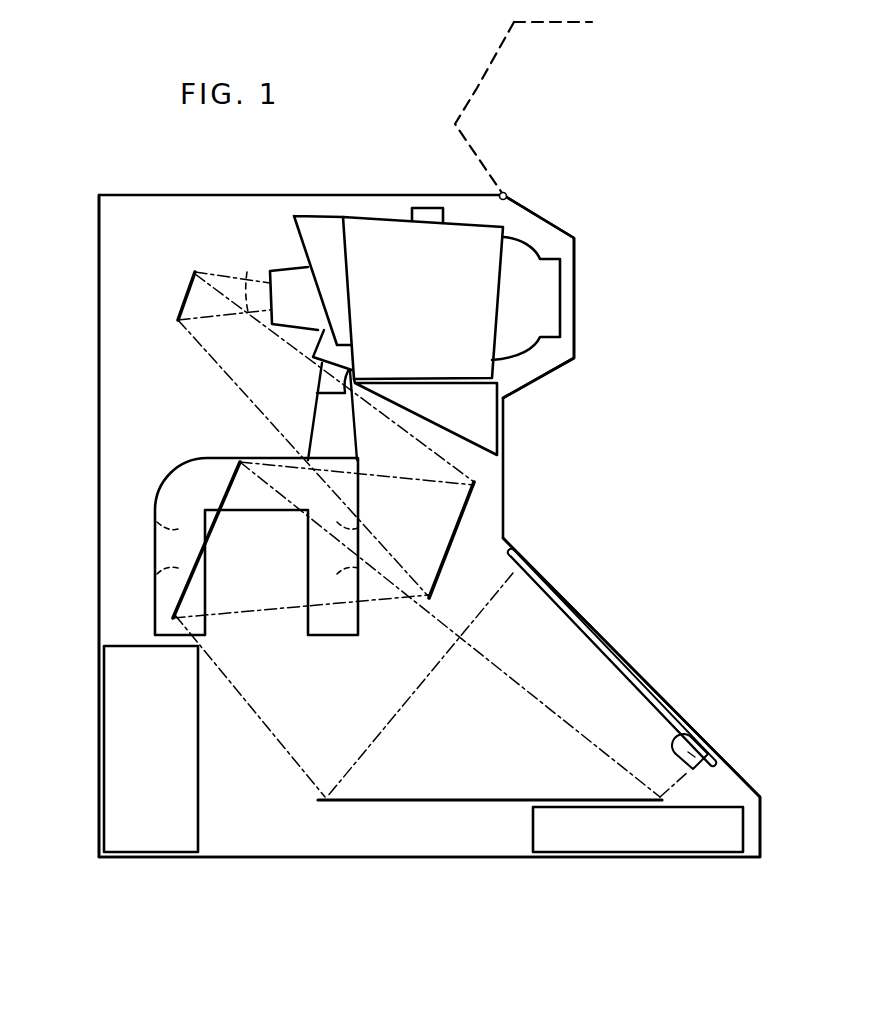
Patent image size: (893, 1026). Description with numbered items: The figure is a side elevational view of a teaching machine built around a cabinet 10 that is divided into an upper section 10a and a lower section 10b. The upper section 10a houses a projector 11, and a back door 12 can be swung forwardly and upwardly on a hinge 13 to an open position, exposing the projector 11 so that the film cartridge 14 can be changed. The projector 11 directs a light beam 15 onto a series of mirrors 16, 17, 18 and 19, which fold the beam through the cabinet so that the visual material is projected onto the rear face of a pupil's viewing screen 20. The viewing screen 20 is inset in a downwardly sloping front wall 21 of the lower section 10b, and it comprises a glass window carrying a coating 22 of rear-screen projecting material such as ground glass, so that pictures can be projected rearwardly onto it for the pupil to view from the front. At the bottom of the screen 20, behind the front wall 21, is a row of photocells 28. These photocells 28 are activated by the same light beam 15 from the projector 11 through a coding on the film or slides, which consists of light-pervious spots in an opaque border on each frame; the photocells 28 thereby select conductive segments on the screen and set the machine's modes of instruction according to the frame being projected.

The cabinet 10 is at (97, 521).
The upper section 10a is at (147, 380).
The lower section 10b is at (307, 840).
The projector 11 is at (433, 336).
The back door 12 is at (484, 90).
The hinge 13 is at (506, 192).
The film cartridge 14 is at (537, 297).
The light beam 15 is at (247, 280).
The mirror 16 is at (184, 302).
The mirror 17 is at (452, 541).
The mirror 18 is at (205, 552).
The mirror 19 is at (408, 802).
The pupil's viewing screen 20 is at (626, 661).
The front wall 21 is at (730, 773).
The coating 22 is at (655, 708).
The photocells 28 is at (690, 736).